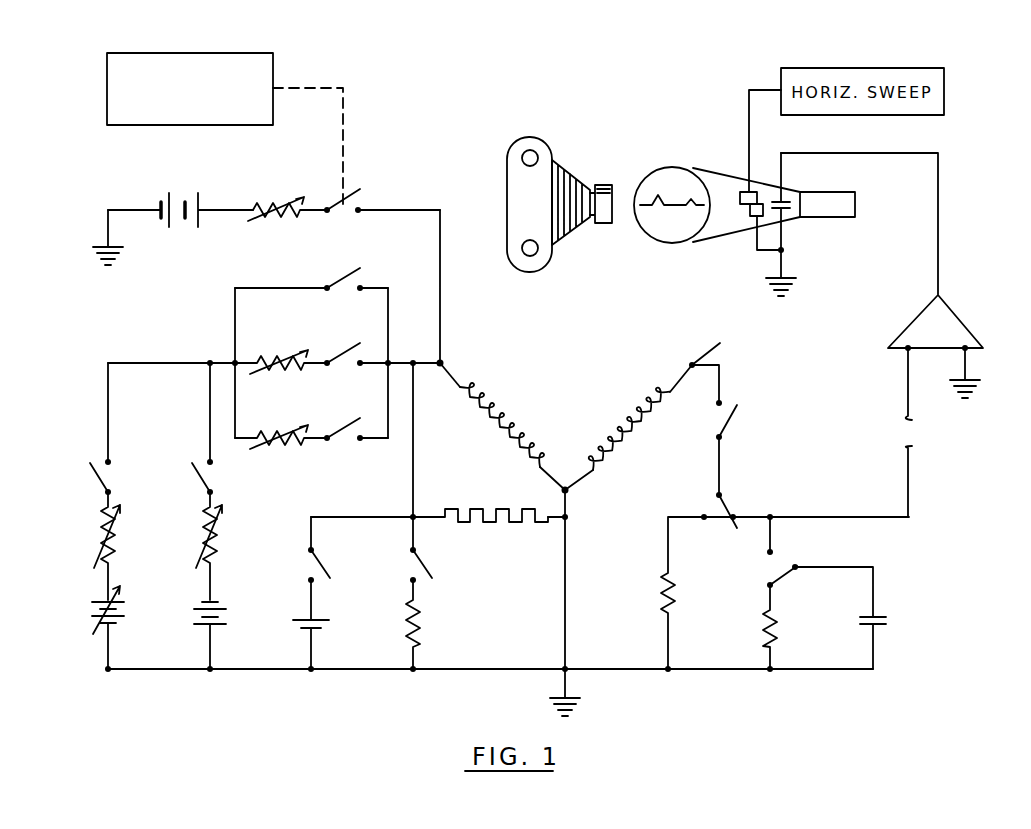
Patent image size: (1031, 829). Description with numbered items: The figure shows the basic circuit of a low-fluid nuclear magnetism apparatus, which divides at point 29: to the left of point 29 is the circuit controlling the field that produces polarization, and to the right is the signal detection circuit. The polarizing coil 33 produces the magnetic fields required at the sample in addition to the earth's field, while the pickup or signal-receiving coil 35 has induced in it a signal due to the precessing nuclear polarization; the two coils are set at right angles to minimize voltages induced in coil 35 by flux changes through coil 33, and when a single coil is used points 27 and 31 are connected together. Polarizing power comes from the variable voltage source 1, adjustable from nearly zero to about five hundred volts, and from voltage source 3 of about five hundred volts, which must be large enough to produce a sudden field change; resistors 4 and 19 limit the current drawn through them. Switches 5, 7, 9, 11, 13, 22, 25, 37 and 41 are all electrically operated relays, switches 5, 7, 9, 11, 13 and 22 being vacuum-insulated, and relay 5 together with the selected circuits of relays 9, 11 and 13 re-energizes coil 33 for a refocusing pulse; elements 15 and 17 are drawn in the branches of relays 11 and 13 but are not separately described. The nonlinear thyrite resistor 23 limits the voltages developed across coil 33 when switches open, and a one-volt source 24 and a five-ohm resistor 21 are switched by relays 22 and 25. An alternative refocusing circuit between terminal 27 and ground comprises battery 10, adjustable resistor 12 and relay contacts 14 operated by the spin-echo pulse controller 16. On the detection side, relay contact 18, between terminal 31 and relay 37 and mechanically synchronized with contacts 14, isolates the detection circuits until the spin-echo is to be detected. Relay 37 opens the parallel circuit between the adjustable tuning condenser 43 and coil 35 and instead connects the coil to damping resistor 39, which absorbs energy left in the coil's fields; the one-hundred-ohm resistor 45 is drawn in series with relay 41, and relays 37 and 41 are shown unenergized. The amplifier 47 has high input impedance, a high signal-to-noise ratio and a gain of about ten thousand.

The variable voltage source 1 is at (100, 605).
The voltage source 3 is at (200, 630).
The resistor 4 is at (118, 545).
The switch 5 is at (95, 480).
The switch 7 is at (197, 480).
The switch 9 is at (347, 290).
The battery 10 is at (183, 200).
The switch 11 is at (347, 366).
The adjustable resistor 12 is at (268, 204).
The switch 13 is at (347, 441).
The relay contacts 14 is at (345, 215).
The variable resistor 15 is at (270, 357).
The spin-echo pulse controller 16 is at (205, 53).
The variable resistor 17 is at (270, 432).
The relay contact 18 is at (730, 420).
The resistor 19 is at (220, 545).
The resistor 21 is at (432, 619).
The switch 22 is at (328, 566).
The nonlinear resistor 23 is at (503, 508).
The voltage source 24 is at (300, 617).
The switch 25 is at (432, 566).
The point 27 is at (445, 360).
The point 29 is at (570, 492).
The point 31 is at (705, 360).
The polarizing coil 33 is at (497, 420).
The pickup coil 35 is at (635, 410).
The relay 37 is at (735, 510).
The damping resistor 39 is at (657, 595).
The relay 41 is at (770, 578).
The tuning condenser 43 is at (887, 625).
The resistor 45 is at (782, 635).
The amplifier 47 is at (958, 318).